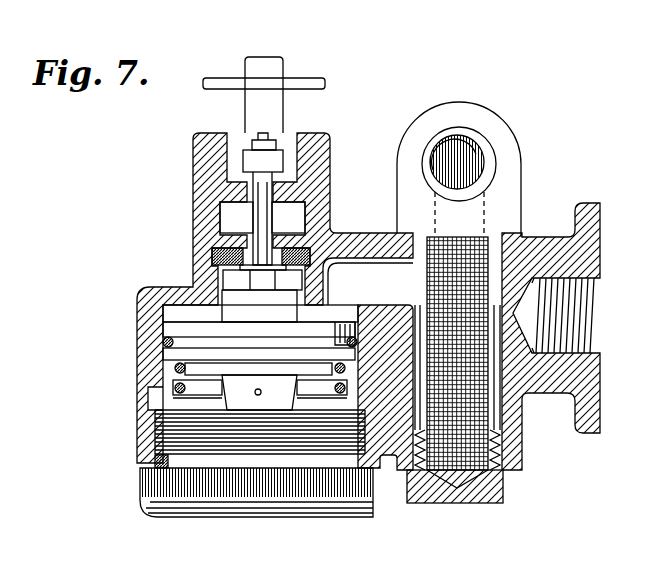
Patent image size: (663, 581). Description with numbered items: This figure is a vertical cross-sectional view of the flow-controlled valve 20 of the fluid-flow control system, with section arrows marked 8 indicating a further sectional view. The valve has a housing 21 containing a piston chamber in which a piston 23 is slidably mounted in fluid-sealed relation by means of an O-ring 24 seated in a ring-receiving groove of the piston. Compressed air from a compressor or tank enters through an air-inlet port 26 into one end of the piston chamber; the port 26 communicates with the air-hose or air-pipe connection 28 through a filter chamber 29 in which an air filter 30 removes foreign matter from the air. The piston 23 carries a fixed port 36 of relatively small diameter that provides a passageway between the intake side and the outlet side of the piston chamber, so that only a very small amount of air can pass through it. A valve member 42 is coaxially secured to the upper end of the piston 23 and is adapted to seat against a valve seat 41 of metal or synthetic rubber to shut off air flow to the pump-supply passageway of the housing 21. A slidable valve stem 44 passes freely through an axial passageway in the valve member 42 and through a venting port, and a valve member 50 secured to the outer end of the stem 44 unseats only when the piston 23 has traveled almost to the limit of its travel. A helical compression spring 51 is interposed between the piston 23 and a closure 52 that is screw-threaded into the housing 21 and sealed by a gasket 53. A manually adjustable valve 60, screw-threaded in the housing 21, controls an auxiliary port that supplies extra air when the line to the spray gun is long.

The section line 8- 8 is at (264, 70).
The flow-controlled valve 20 is at (563, 90).
The housing 21 is at (145, 367).
The piston 23 is at (240, 392).
The O-ring 24 is at (163, 340).
The air-inlet port 26 is at (335, 296).
The air-hose or air-pipe connection 28 is at (468, 162).
The filter chamber 29 is at (527, 235).
The air filter 30 is at (476, 415).
The fixed port 36 is at (259, 396).
The valve seat 41 is at (212, 252).
The valve member 42 is at (230, 280).
The valve stem 44 is at (258, 215).
The valve member 50 is at (248, 156).
The helical compression spring 51 is at (172, 390).
The closure 52 is at (160, 502).
The gasket 53 is at (160, 460).
The manually adjustable valve 60 is at (265, 114).